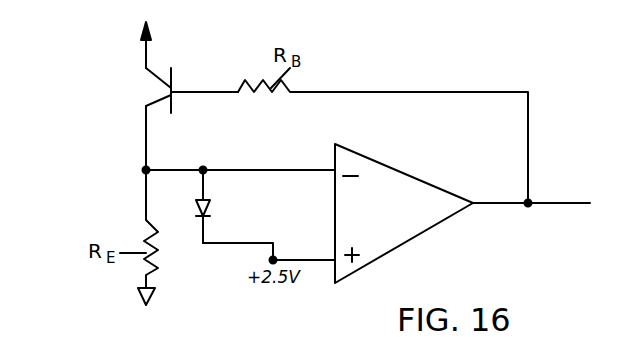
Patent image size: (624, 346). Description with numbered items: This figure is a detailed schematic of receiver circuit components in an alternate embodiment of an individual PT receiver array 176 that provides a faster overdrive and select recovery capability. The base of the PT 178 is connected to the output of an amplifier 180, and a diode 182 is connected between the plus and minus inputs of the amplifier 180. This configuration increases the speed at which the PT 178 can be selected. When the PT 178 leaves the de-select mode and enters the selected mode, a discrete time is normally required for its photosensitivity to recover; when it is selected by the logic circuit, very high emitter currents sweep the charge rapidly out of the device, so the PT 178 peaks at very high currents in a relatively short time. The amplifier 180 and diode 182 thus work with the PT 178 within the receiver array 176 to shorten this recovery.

The individual PT receiver array 176 is at (134, 166).
The PT 178 is at (178, 78).
The amplifier 180 is at (421, 178).
The diode 182 is at (212, 211).